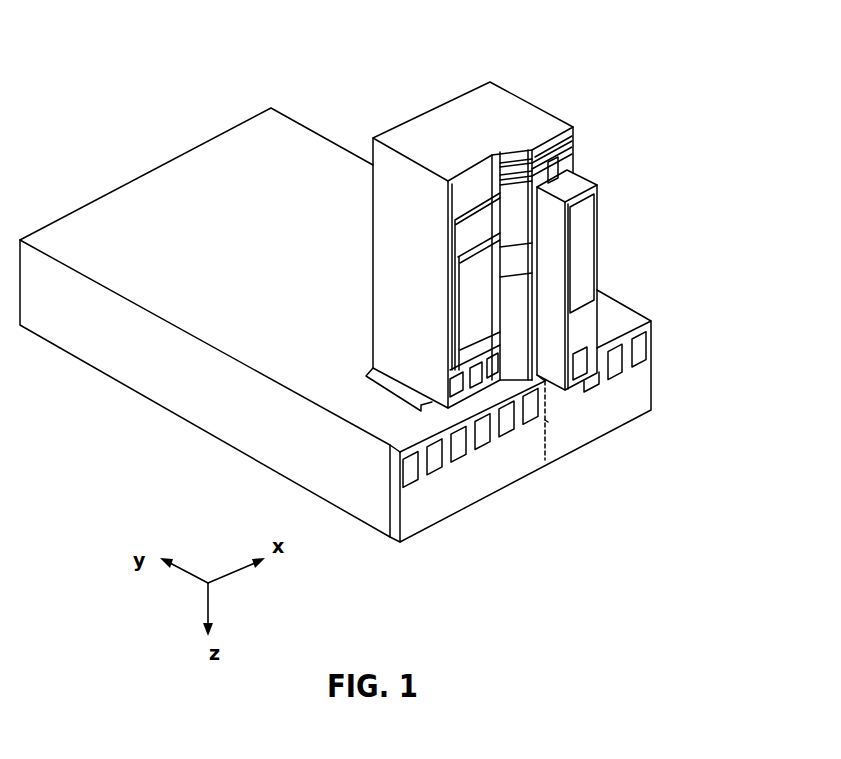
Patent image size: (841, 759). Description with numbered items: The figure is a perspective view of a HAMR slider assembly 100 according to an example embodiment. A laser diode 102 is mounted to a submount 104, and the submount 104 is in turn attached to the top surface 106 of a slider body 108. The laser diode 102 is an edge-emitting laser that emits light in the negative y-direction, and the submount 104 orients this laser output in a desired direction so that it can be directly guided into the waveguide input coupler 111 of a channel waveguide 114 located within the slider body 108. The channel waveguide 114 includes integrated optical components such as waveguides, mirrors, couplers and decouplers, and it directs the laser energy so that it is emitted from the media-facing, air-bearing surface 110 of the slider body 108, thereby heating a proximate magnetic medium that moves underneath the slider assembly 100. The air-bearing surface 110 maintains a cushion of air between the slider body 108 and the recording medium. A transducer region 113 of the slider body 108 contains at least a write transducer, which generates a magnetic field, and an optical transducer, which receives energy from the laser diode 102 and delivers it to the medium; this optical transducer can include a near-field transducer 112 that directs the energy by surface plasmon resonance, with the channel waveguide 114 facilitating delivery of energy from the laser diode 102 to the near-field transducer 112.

The HAMR slider assembly 100 is at (704, 50).
The laser diode 102 is at (575, 188).
The submount 104 is at (537, 122).
The top surface 106 is at (183, 205).
The slider body 108 is at (623, 303).
The air-bearing surface 110 is at (384, 530).
The waveguide input coupler 111 is at (546, 381).
The near-field transducer 112 is at (545, 460).
The transducer region 113 is at (538, 458).
The channel waveguide 114 is at (548, 421).